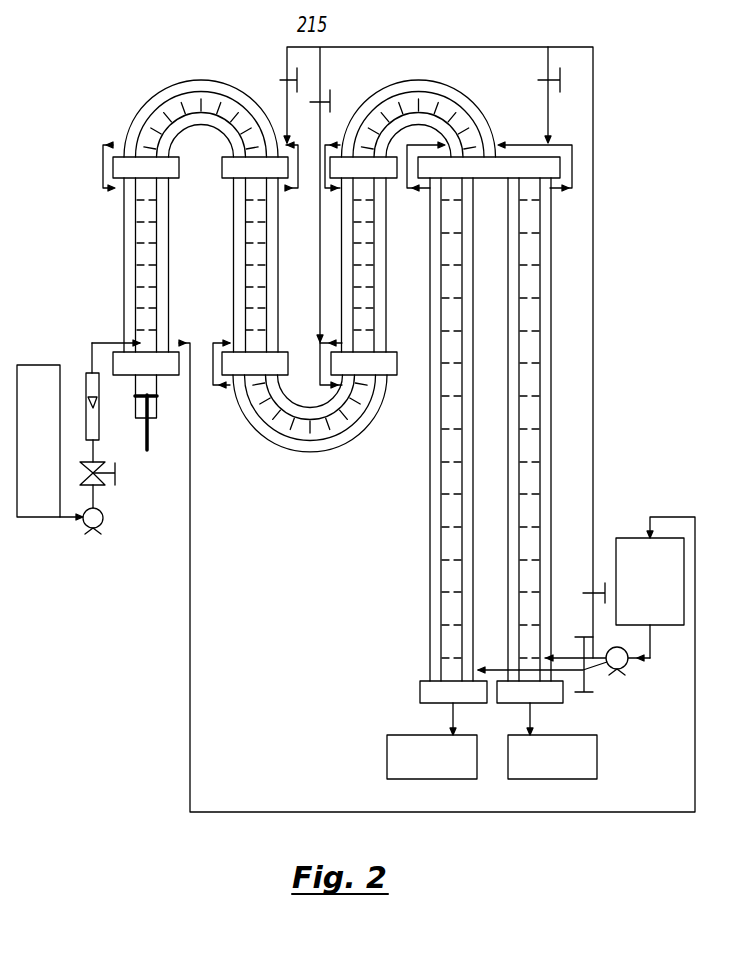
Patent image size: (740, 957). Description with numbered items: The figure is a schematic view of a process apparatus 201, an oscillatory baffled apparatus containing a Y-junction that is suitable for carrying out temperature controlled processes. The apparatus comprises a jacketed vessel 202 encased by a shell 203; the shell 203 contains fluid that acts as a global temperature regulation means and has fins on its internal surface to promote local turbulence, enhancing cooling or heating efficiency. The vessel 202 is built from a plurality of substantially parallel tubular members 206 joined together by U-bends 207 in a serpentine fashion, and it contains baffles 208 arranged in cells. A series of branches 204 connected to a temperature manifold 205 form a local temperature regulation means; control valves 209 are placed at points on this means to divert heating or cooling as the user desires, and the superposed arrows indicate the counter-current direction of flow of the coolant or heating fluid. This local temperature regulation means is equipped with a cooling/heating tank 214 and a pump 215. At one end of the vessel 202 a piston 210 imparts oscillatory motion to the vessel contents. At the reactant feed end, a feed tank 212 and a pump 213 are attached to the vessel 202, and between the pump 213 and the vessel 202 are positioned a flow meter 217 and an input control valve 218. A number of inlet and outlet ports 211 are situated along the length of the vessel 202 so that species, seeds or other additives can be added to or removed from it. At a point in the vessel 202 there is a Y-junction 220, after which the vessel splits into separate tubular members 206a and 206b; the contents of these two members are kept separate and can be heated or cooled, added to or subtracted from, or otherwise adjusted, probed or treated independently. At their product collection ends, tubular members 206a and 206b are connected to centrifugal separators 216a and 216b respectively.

The process apparatus 201 is at (96, 51).
The jacketed vessel 202 is at (135, 212).
The shell 203 is at (124, 250).
The branches 204 is at (546, 68).
The temperature manifold 205 is at (423, 47).
The tubular members 206 is at (128, 300).
The separate tubular member 206a is at (433, 484).
The separate tubular member 206b is at (548, 350).
The U-bends 207 is at (205, 80).
The baffles 208 is at (537, 263).
The control valves 209 is at (562, 82).
The piston 210 is at (147, 450).
The inlet and outlet ports 211 is at (112, 167).
The feed tank 212 is at (37, 508).
The pump 213 is at (90, 530).
The cooling/heating tank 214 is at (633, 547).
The pump 215 is at (617, 671).
The centrifugal separator 216a is at (395, 768).
The centrifugal separator 216b is at (583, 757).
The flow meter 217 is at (86, 383).
The input control valve 218 is at (100, 476).
The Y-junction 220 is at (560, 169).